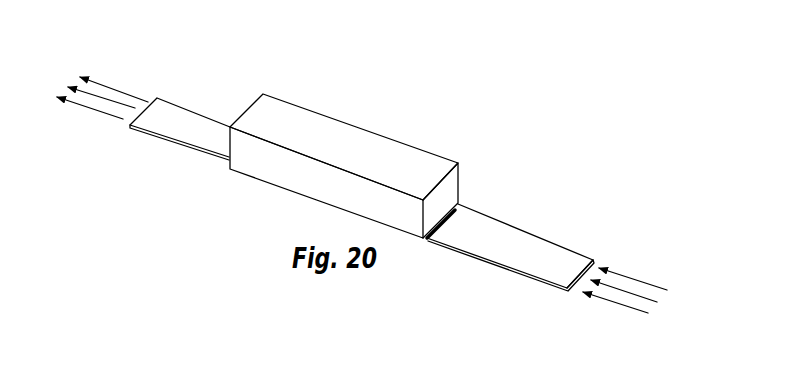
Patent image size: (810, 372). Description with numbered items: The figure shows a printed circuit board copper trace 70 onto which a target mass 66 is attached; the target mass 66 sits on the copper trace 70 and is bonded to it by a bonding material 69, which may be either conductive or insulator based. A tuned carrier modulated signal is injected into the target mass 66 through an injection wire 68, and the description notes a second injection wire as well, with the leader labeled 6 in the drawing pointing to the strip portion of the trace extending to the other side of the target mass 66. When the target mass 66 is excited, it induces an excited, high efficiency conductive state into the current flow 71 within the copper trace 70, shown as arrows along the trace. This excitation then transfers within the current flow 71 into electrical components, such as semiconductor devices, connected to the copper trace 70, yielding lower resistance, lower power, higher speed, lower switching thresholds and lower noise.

The flat flexible strip 6 is at (228, 126).
The target mass 66 is at (355, 121).
The injection wire 68 is at (459, 207).
The bonding material 69 is at (447, 222).
The printed circuit board copper trace 70 is at (593, 258).
The current flow 71 is at (78, 113).